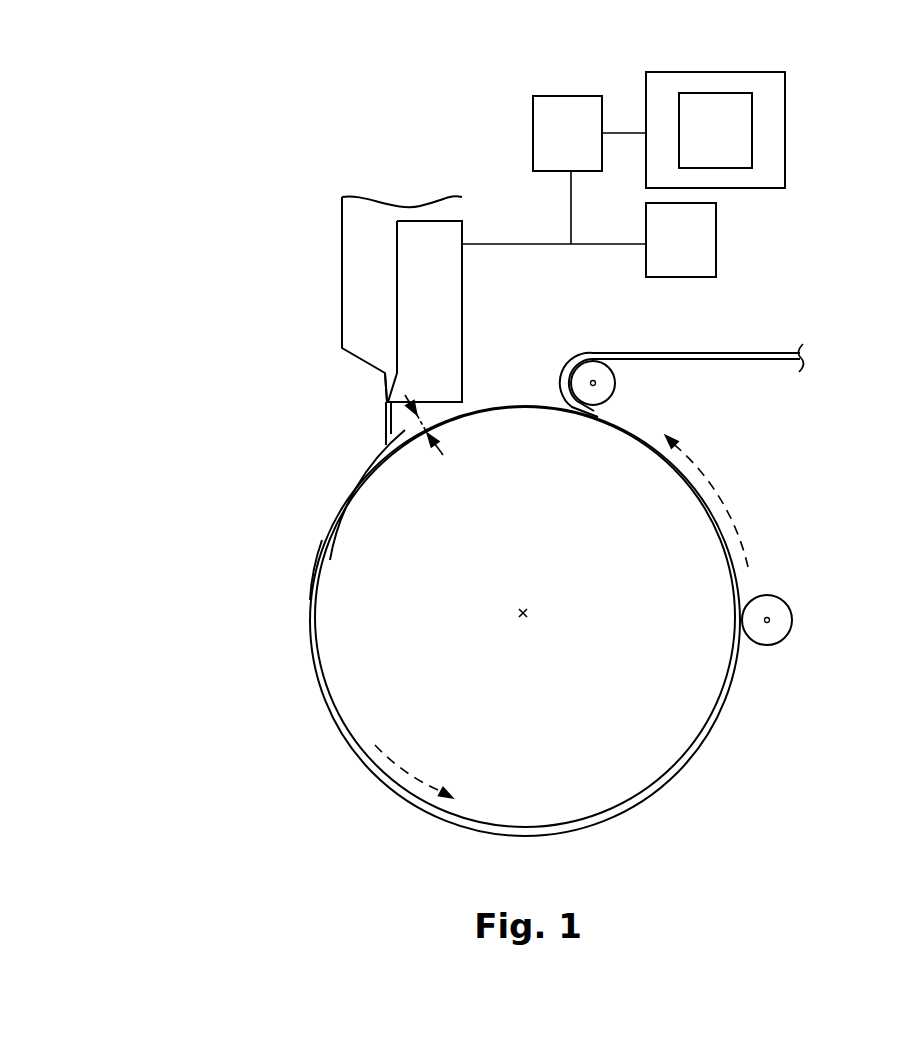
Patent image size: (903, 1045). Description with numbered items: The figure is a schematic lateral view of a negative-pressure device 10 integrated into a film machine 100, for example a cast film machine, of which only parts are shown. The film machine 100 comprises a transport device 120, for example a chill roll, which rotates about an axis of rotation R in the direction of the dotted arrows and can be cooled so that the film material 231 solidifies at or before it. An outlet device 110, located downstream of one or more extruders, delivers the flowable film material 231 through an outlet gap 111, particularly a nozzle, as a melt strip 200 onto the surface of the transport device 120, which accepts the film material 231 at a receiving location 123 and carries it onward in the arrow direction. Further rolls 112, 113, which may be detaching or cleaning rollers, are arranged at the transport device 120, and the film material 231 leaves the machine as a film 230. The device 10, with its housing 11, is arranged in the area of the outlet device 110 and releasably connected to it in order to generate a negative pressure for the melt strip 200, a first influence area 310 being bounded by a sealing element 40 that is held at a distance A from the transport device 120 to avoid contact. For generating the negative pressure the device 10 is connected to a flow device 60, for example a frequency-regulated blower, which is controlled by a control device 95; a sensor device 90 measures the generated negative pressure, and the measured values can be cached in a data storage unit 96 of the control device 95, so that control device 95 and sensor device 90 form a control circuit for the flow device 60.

The film machine 100 is at (188, 170).
The device 10 is at (428, 221).
The outlet device 110 is at (353, 259).
The housing 11 is at (407, 343).
The outlet gap 111 is at (385, 392).
The first influence area 310 is at (366, 427).
The sealing element 40 is at (452, 407).
The melt strip 200 is at (400, 439).
The transport device 120 is at (522, 687).
The axis of rotation R is at (530, 610).
The receiving location 123 is at (394, 465).
The film material 231 is at (322, 537).
The film 230 is at (712, 352).
The roll 113 is at (615, 385).
The roll 112 is at (767, 645).
The flow device 60 is at (548, 147).
The control device 95 is at (786, 168).
The data storage unit 96 is at (695, 143).
The sensor device 90 is at (661, 253).